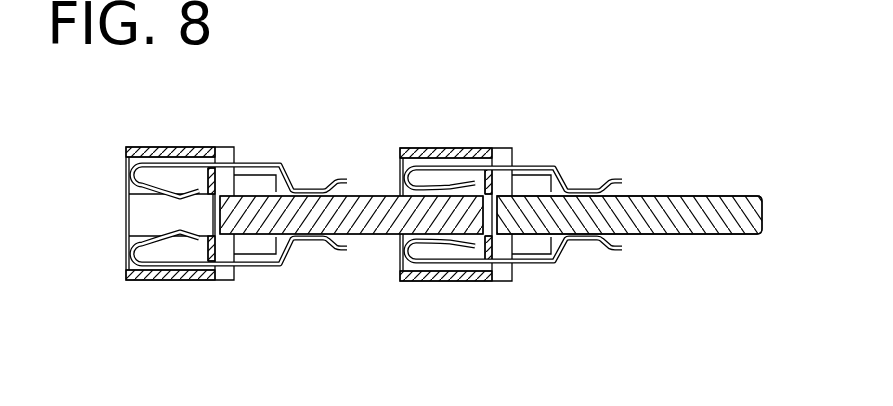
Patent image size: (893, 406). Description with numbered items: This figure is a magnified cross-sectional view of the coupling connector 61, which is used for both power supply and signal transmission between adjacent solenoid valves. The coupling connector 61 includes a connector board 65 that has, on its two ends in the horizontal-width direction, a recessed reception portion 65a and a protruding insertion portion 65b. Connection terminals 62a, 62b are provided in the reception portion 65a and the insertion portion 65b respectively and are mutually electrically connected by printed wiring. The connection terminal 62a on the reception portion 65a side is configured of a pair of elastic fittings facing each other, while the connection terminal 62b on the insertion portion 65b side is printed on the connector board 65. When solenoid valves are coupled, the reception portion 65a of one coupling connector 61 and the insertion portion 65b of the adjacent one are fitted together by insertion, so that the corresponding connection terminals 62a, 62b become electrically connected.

The coupling connector 61 is at (449, 174).
The connection terminal 62a is at (193, 162).
The connection terminal 62b is at (425, 236).
The connector board 65 is at (496, 190).
The reception portion 65a is at (160, 148).
The insertion portion 65b is at (455, 210).